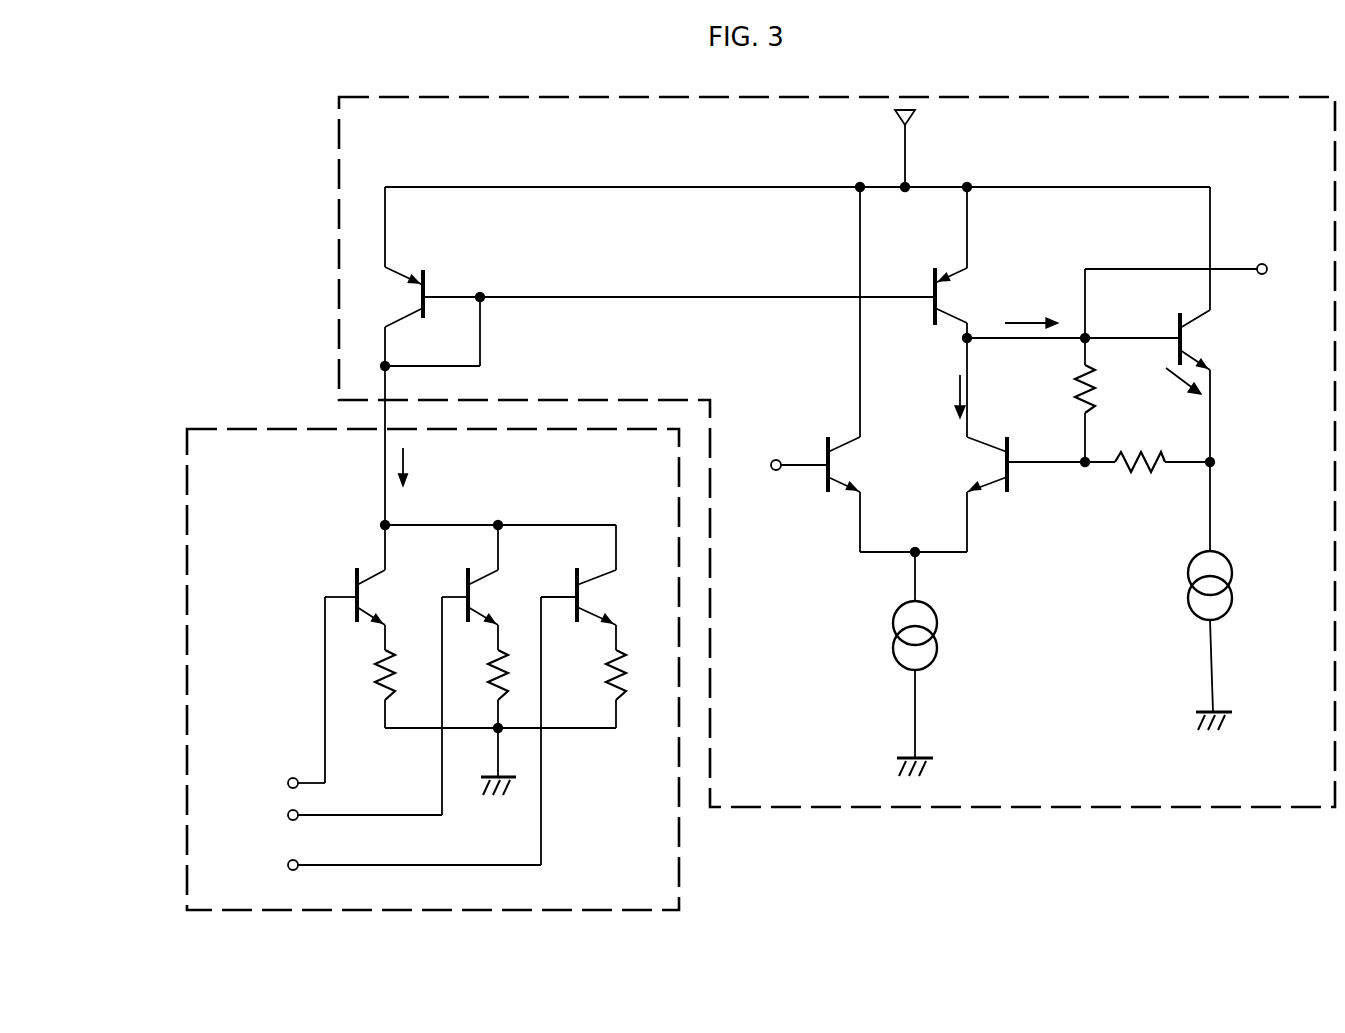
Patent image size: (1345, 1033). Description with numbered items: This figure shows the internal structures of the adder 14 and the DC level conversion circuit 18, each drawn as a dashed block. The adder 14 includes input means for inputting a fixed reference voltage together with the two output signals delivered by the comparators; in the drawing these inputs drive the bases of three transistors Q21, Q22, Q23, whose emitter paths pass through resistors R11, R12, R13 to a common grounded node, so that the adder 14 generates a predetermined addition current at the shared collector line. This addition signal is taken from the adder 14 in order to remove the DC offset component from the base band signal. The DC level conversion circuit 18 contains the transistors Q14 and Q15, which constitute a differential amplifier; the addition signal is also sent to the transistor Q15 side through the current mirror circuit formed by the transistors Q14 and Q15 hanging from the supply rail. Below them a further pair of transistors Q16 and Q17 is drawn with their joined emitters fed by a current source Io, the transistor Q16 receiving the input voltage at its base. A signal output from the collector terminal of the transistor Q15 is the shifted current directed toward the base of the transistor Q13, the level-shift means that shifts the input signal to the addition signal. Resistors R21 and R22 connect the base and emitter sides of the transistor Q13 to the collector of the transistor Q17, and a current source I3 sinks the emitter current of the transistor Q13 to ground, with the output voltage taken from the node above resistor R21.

The adder 14 is at (259, 428).
The DC level conversion circuit 18 is at (1217, 97).
The transistor Q13 is at (1176, 369).
The transistor Q14 is at (416, 276).
The transistor Q15 is at (941, 312).
The transistor Q16 is at (859, 369).
The transistor Q17 is at (974, 494).
The transistor Q21 is at (355, 595).
The transistor Q22 is at (470, 587).
The transistor Q23 is at (578, 587).
The resistor R11 is at (364, 676).
The resistor R12 is at (477, 675).
The resistor R13 is at (587, 675).
The resistor R21 is at (1063, 400).
The resistor R22 is at (1140, 449).
The current source Io is at (929, 635).
The current source I3 is at (1226, 585).